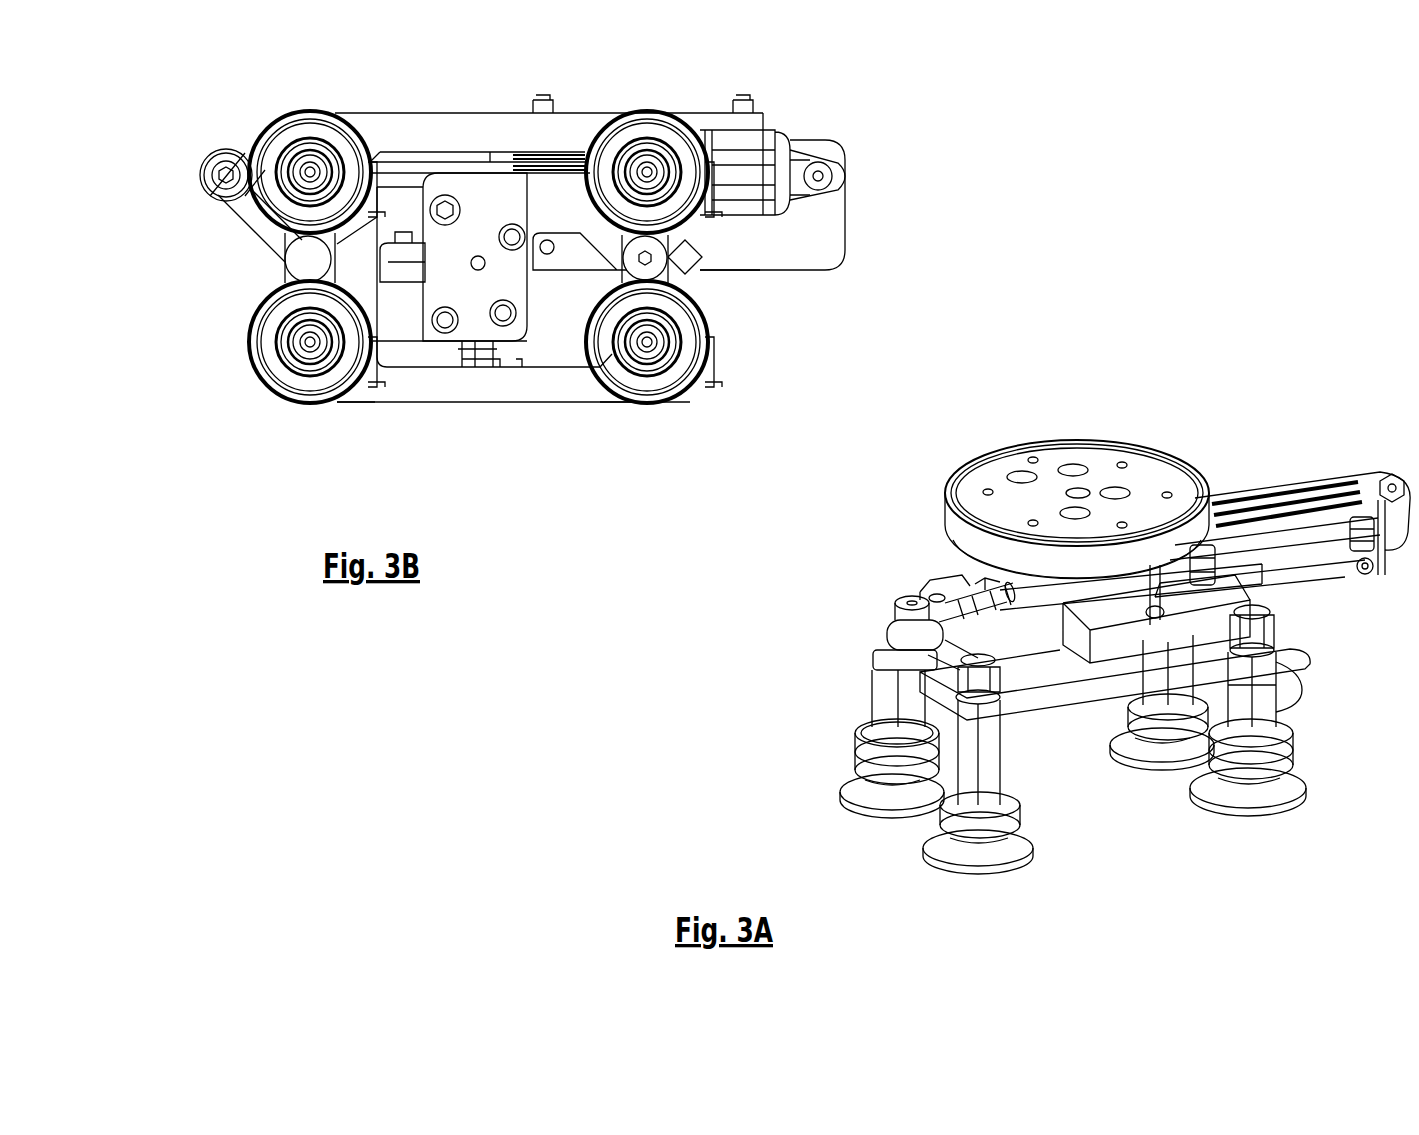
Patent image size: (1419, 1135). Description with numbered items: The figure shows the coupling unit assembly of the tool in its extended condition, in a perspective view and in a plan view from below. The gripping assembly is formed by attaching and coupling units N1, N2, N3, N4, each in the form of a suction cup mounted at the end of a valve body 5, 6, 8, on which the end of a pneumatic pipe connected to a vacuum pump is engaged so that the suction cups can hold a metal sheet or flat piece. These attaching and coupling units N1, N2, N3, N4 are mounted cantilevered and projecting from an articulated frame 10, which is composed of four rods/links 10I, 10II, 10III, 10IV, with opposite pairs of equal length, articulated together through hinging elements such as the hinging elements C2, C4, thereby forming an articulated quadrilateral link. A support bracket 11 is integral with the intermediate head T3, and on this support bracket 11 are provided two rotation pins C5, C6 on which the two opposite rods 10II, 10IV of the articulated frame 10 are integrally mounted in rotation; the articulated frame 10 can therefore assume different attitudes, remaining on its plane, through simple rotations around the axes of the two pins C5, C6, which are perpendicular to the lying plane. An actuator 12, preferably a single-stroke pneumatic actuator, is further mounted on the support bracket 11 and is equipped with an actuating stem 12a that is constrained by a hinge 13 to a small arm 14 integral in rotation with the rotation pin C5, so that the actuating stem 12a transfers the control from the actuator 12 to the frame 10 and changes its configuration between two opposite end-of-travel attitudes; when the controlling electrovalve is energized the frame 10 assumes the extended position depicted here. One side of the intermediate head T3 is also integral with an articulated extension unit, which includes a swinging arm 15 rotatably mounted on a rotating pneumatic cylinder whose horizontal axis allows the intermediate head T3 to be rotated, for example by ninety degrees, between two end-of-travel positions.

In FIG. 3B, the articulated frame 10 is at (477, 418).
In FIG. 3A, the articulated frame 10 is at (1055, 720).
In FIG. 3B, the rod/link 10I is at (450, 128).
In FIG. 3B, the rod/link 10II is at (705, 258).
In FIG. 3B, the rod/link 10III is at (568, 390).
In FIG. 3B, the rod/link 10IV is at (285, 278).
In FIG. 3B, the support bracket 11 is at (512, 287).
In FIG. 3A, the support bracket 11 is at (1105, 650).
In FIG. 3B, the actuator 12 is at (770, 160).
In FIG. 3A, the actuator 12 is at (1325, 485).
In FIG. 3B, the actuating stem 12a is at (470, 160).
In FIG. 3B, the hinge 13 is at (228, 150).
In FIG. 3A, the hinge 13 is at (888, 612).
In FIG. 3B, the small arm 14 is at (248, 212).
In FIG. 3A, the swinging arm 15 is at (945, 597).
In FIG. 3A, the valve body 5 is at (1005, 760).
In FIG. 3A, the valve body 6 is at (880, 692).
In FIG. 3A, the valve body 8 is at (1275, 685).
In FIG. 3B, the attaching and coupling unit N1 is at (318, 98).
In FIG. 3A, the attaching and coupling unit N1 is at (1023, 878).
In FIG. 3B, the attaching and coupling unit N2 is at (243, 404).
In FIG. 3A, the attaching and coupling unit N2 is at (822, 760).
In FIG. 3A, the attaching and coupling unit N3 is at (1143, 772).
In FIG. 3B, the attaching and coupling unit N4 is at (675, 108).
In FIG. 3A, the attaching and coupling unit N4 is at (1280, 823).
In FIG. 3A, the hinging element C2 is at (902, 600).
In FIG. 3A, the hinging element C4 is at (1268, 600).
In FIG. 3B, the rotation pin C5 is at (305, 260).
In FIG. 3B, the rotation pin C6 is at (660, 268).
In FIG. 3A, the intermediate head T3 is at (1186, 436).